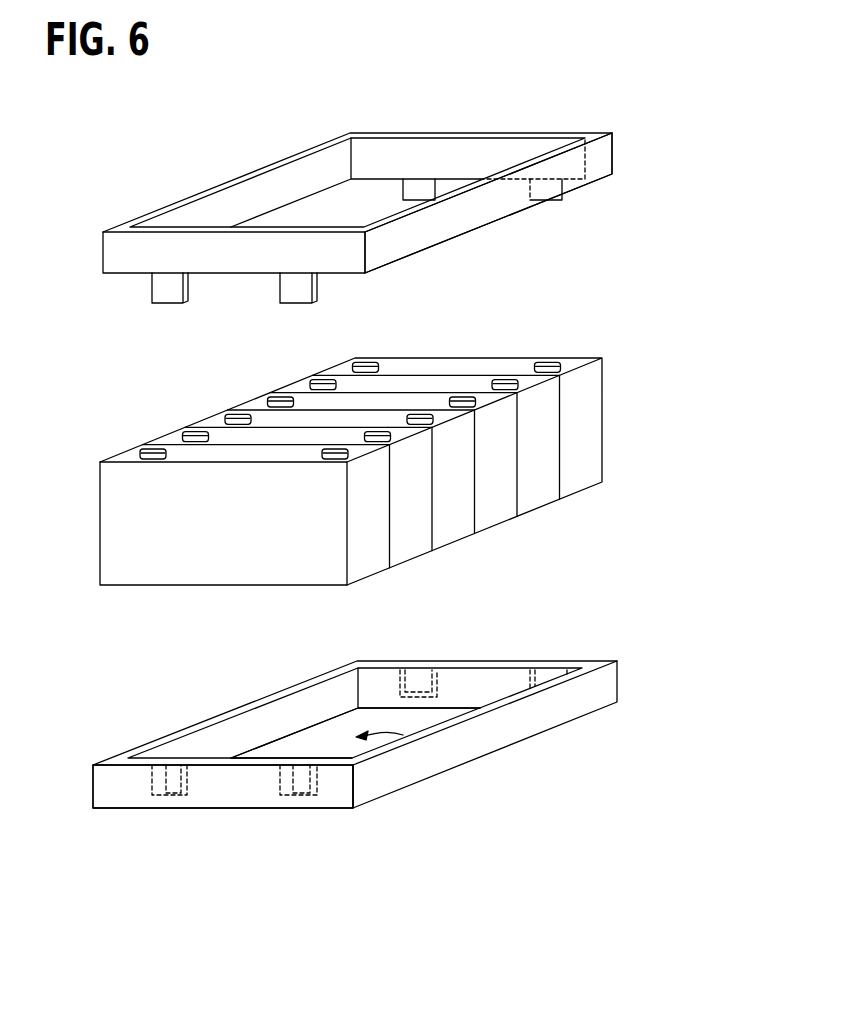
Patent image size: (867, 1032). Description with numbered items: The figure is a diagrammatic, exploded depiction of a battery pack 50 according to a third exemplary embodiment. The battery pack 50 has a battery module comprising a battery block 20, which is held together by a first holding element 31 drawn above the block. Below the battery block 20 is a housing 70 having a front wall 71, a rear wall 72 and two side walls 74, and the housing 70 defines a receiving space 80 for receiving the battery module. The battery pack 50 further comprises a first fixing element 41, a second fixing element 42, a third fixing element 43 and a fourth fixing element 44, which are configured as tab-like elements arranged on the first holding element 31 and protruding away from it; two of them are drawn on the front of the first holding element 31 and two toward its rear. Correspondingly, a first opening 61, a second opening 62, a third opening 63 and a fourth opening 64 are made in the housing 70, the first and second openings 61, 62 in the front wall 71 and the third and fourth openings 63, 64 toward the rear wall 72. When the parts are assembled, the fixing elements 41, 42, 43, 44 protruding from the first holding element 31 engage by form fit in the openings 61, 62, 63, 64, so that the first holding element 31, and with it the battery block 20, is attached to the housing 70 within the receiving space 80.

The battery block 20 is at (585, 398).
The first holding element 31 is at (512, 205).
The first fixing element 41 is at (173, 303).
The second fixing element 42 is at (295, 303).
The third fixing element 43 is at (422, 190).
The fourth fixing element 44 is at (545, 190).
The battery pack 50 is at (408, 194).
The first opening 61 is at (168, 797).
The second opening 62 is at (297, 797).
The third opening 63 is at (416, 663).
The fourth opening 64 is at (550, 663).
The housing 70 is at (403, 726).
The front wall 71 is at (223, 783).
The rear wall 72 is at (487, 685).
The side wall 74 is at (238, 728).
The receiving space 80 is at (403, 735).